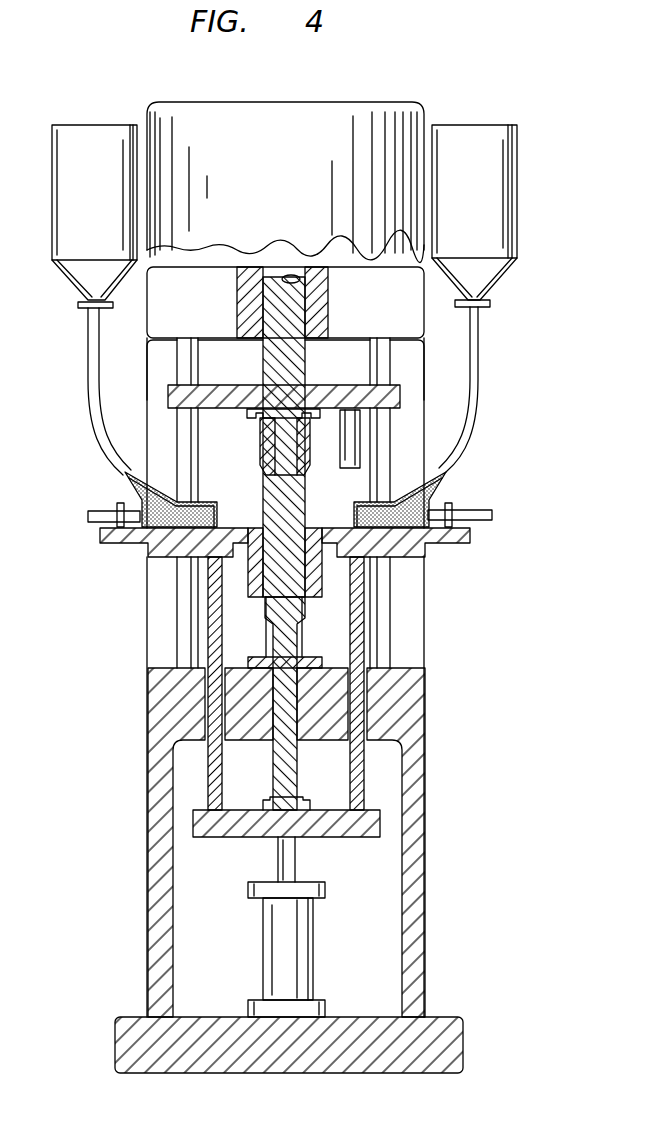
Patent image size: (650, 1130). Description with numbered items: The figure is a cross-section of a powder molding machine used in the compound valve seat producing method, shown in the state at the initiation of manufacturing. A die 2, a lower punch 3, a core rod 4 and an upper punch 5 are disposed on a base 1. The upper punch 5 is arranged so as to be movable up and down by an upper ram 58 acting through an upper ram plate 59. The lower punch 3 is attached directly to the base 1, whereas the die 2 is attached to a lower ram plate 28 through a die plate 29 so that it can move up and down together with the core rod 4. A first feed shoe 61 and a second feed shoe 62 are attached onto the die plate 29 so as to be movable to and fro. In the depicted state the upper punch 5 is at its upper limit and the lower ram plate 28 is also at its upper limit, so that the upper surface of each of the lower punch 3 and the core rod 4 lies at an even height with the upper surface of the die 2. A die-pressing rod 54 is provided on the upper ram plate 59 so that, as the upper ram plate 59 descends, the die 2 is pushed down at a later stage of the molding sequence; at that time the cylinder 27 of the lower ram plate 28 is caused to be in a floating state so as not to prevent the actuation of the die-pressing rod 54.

The base 1 is at (420, 703).
The die 2 is at (250, 528).
The lower punch 3 is at (262, 567).
The core rod 4 is at (279, 601).
The upper punch 5 is at (307, 448).
The cylinder 27 is at (298, 942).
The lower ram plate 28 is at (373, 823).
The die plate 29 is at (412, 547).
The die-pressing rod 54 is at (357, 460).
The upper ram 58 is at (263, 302).
The upper ram plate 59 is at (170, 393).
The first feed shoe 61 is at (130, 495).
The second feed shoe 62 is at (433, 492).